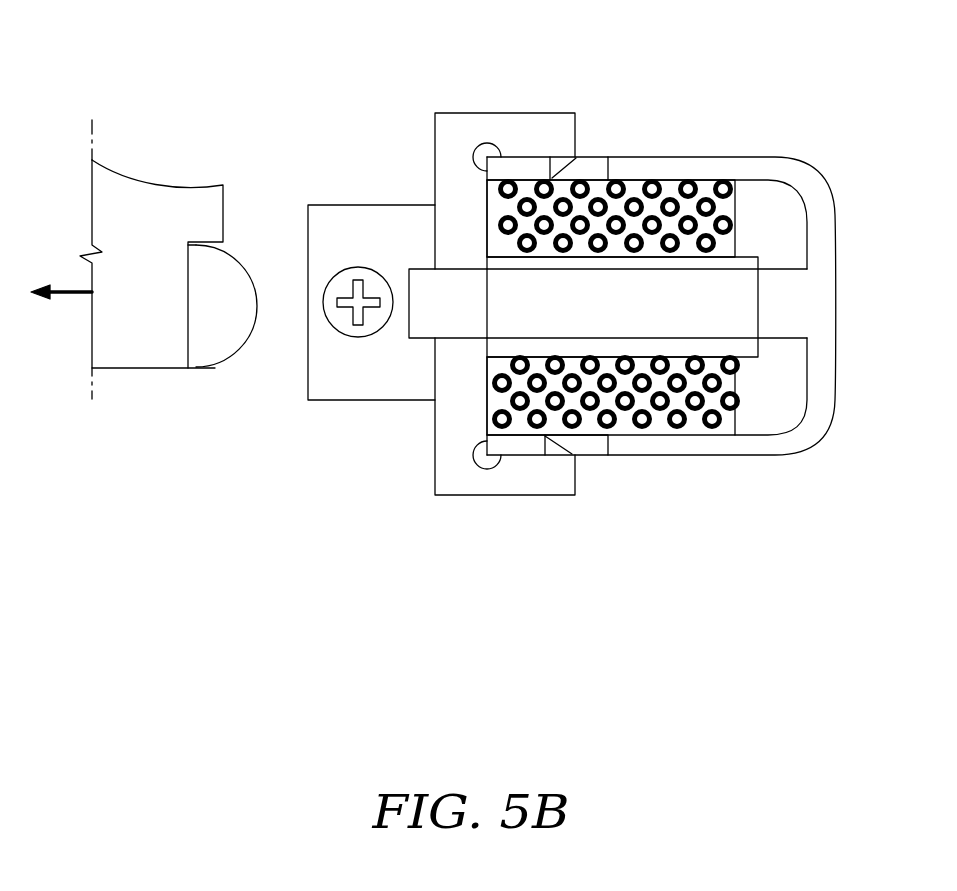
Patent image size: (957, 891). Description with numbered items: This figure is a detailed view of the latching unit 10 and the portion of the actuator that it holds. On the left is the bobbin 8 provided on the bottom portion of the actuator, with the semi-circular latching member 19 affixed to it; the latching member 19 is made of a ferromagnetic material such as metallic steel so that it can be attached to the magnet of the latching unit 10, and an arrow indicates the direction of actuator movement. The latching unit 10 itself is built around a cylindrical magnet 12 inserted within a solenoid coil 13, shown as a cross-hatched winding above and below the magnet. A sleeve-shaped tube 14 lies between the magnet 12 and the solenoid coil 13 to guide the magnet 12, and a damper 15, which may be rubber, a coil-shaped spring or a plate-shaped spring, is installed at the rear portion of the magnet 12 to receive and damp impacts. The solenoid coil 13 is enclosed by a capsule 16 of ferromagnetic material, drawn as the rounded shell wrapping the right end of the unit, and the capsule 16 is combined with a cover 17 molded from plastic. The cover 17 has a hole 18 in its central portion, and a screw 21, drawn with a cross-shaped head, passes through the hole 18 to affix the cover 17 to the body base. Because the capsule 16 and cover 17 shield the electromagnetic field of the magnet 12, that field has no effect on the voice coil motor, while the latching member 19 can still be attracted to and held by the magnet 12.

The bobbin 8 is at (122, 355).
The latching unit 10 is at (808, 82).
The cylindrical magnet 12 is at (425, 278).
The solenoid coil 13 is at (636, 227).
The sleeve-shaped tube 14 is at (695, 258).
The damper 15 is at (797, 310).
The capsule 16 is at (765, 448).
The cover 17 is at (525, 480).
The hole 18 is at (340, 268).
The latching member 19 is at (212, 348).
The screw 21 is at (358, 326).